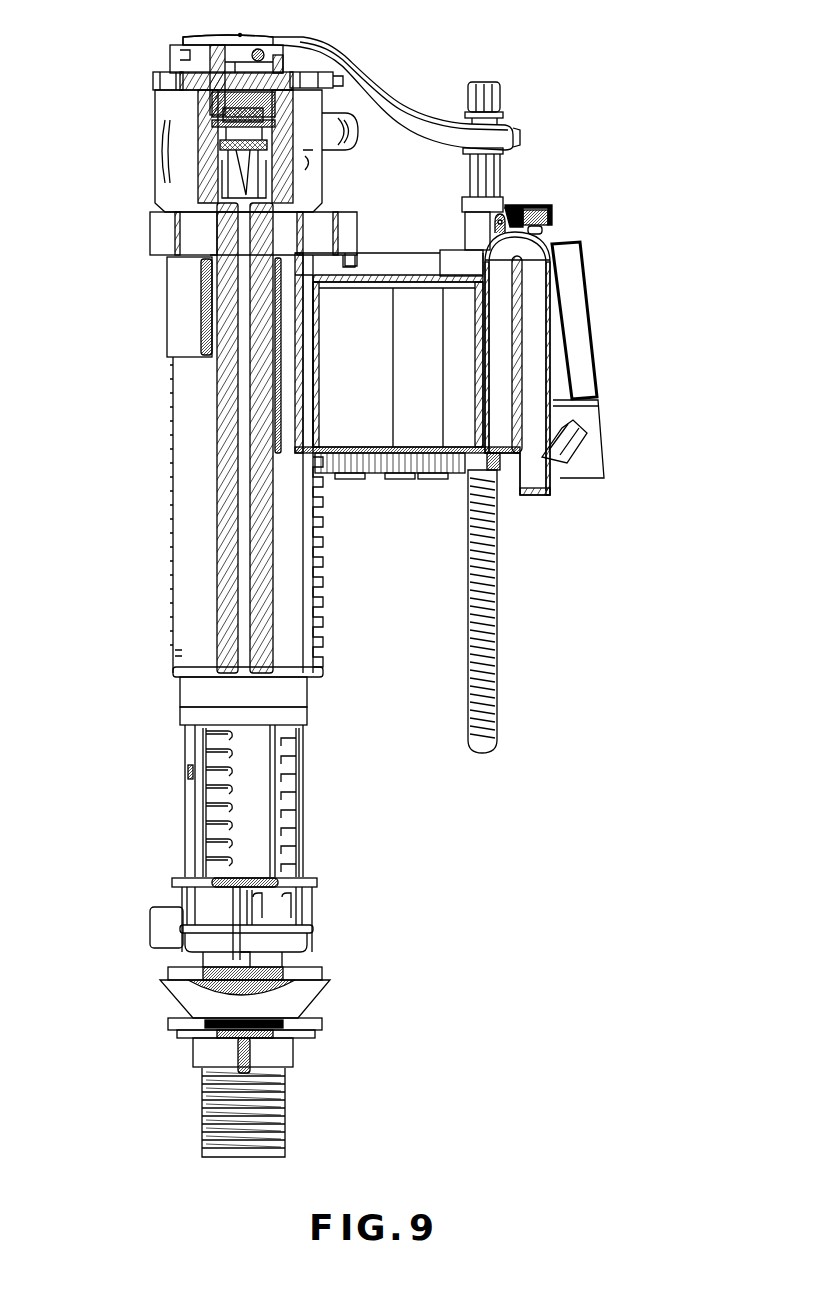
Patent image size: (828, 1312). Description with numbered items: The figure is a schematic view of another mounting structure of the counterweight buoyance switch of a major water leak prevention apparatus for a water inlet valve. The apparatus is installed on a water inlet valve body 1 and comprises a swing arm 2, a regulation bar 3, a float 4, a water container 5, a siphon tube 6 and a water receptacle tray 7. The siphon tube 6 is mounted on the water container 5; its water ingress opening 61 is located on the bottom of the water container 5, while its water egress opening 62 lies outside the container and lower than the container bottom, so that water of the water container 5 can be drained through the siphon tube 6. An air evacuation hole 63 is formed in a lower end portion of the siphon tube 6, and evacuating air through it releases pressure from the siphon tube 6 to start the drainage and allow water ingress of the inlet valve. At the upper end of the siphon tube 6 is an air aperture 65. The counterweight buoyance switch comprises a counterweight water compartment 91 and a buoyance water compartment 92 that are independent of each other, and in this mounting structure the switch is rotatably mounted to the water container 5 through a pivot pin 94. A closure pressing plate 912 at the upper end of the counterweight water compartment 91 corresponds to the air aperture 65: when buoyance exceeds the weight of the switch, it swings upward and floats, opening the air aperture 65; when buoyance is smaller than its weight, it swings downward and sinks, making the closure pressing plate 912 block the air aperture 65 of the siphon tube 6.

The water inlet valve body 1 is at (172, 578).
The swing arm 2 is at (408, 117).
The regulation bar 3 is at (475, 86).
The float 4 is at (424, 274).
The water container 5 is at (374, 256).
The siphon tube 6 is at (550, 305).
The water receptacle tray 7 is at (162, 233).
The water ingress opening 61 is at (500, 432).
The water egress opening 62 is at (540, 490).
The air evacuation hole 63 is at (570, 438).
The air aperture 65 is at (543, 231).
The counterweight water compartment 91 is at (585, 285).
The buoyance water compartment 92 is at (597, 415).
The pivot pin 94 is at (505, 214).
The closure pressing plate 912 is at (553, 206).